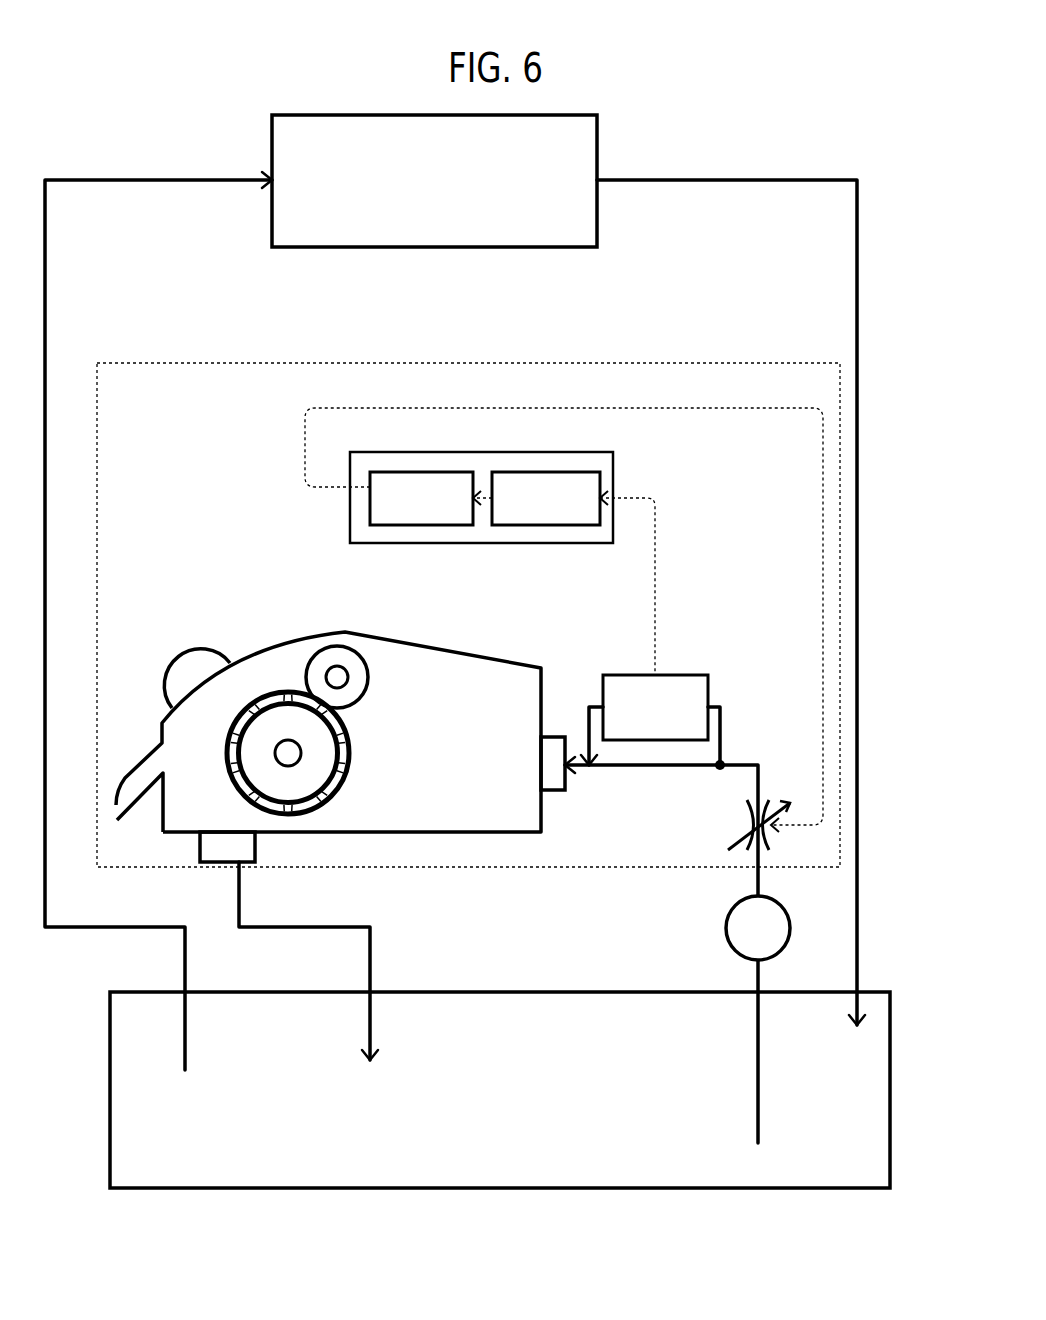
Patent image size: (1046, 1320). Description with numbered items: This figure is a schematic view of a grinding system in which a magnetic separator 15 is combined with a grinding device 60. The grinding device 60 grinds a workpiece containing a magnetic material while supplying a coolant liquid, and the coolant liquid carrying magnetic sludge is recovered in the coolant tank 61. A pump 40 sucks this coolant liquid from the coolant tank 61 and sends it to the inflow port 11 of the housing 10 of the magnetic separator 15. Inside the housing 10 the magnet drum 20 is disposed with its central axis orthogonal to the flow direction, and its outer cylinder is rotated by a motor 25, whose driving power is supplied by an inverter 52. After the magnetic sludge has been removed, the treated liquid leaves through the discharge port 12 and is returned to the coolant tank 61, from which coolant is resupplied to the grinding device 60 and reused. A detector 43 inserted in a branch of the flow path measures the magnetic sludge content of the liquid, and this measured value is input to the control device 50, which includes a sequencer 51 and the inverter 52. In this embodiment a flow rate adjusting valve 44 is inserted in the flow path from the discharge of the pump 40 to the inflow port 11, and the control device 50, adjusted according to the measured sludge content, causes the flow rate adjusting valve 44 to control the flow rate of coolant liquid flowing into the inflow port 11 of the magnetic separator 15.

The housing 10 is at (328, 718).
The inflow port 11 is at (583, 782).
The discharge port 12 is at (264, 847).
The magnetic separator 15 is at (468, 597).
The magnet drum 20 is at (328, 753).
The motor 25 is at (187, 663).
The pump 40 is at (786, 923).
The detector 43 is at (676, 693).
The flow rate adjusting valve 44 is at (736, 821).
The control device 50 is at (515, 481).
The sequencer 51 is at (546, 468).
The inverter 52 is at (439, 468).
The grinding device 60 is at (450, 165).
The coolant tank 61 is at (537, 1090).